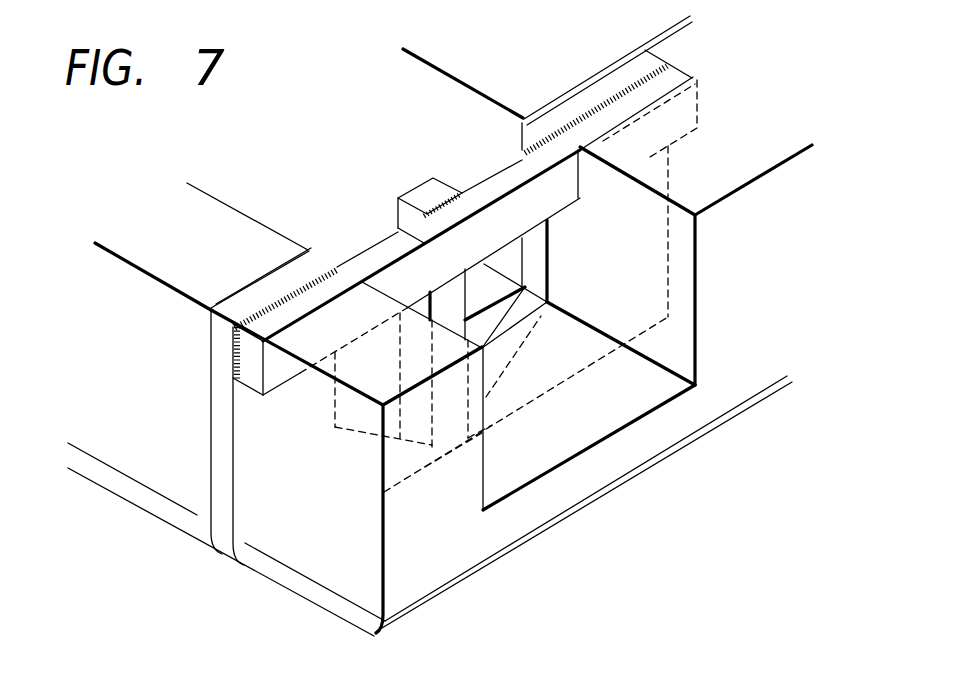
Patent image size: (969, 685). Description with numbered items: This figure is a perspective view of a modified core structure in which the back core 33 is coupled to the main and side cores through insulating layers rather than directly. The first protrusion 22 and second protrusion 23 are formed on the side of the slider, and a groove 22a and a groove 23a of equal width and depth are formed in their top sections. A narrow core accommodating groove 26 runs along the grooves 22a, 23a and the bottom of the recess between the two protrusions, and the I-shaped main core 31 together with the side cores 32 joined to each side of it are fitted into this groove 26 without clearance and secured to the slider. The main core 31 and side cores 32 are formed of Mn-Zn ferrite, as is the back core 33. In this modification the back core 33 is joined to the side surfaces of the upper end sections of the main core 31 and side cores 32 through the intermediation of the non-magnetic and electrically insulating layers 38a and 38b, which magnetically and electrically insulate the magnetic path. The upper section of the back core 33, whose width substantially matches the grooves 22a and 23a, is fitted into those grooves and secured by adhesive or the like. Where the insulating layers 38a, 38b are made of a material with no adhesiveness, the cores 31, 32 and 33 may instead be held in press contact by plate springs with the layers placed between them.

The first protrusion 22 is at (150, 466).
The groove 22a is at (242, 290).
The second protrusion 23 is at (740, 387).
The groove 23a is at (590, 78).
The core accommodating groove 26 is at (232, 560).
The main core 31 is at (432, 190).
The side core 32 is at (561, 385).
The back core 33 is at (393, 246).
The non-magnetic and electrically insulating layer 38a is at (463, 193).
The non-magnetic and electrically insulating layer 38b is at (333, 268).